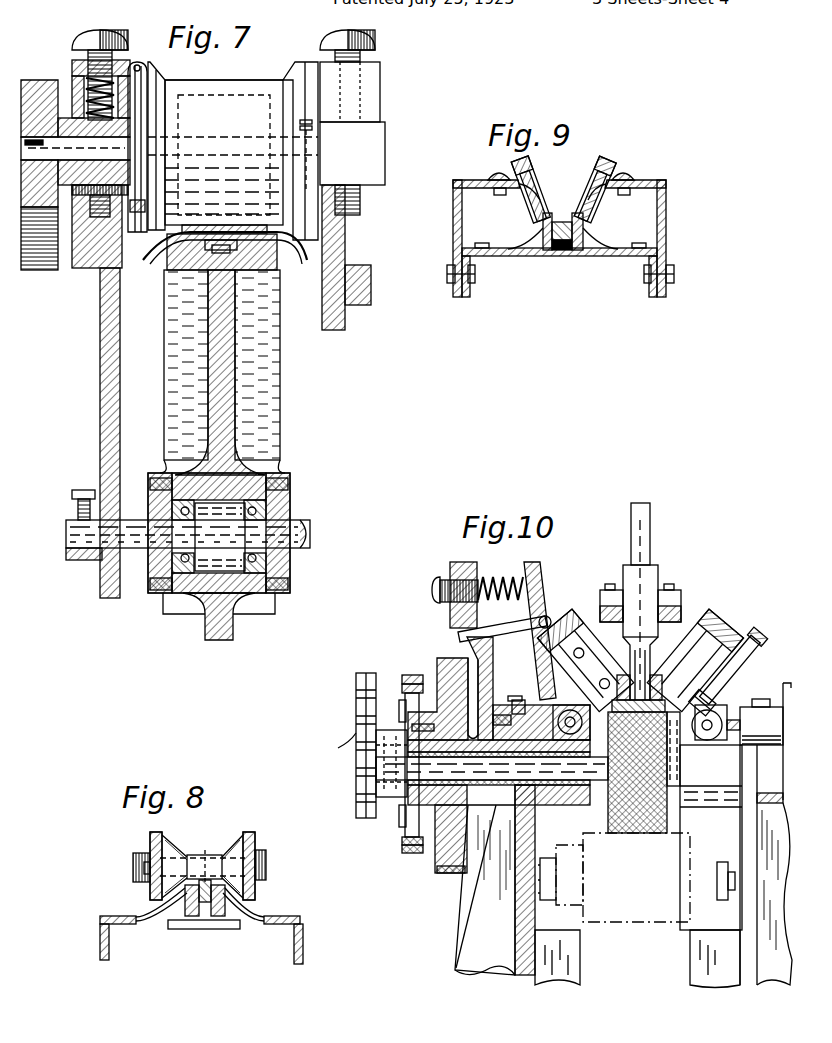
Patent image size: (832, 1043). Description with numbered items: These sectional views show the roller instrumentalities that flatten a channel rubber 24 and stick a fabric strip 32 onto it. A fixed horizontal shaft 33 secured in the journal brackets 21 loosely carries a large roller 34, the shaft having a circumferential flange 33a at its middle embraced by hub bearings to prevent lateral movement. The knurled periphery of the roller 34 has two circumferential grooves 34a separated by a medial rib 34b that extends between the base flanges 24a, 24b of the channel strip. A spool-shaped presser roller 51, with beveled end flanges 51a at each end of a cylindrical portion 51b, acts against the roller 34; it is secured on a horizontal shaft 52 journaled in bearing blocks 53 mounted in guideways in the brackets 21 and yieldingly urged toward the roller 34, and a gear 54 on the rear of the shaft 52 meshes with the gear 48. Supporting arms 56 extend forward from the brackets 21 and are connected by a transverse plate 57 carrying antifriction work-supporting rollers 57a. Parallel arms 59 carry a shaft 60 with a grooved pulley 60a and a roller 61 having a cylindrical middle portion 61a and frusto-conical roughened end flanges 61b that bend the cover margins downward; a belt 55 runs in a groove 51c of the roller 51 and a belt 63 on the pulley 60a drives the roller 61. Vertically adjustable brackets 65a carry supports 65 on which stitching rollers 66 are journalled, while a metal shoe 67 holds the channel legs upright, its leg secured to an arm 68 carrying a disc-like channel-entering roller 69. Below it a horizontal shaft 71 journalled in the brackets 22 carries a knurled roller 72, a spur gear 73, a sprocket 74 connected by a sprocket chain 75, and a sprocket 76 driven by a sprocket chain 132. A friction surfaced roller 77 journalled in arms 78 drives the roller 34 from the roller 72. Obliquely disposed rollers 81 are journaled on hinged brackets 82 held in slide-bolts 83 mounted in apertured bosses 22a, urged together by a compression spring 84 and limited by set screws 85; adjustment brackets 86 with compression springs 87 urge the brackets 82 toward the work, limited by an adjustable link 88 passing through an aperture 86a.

In FIG. 7, the journal brackets 21 is at (100, 322).
In FIG. 10, the journal brackets 22 is at (515, 925).
In FIG. 10, the apertured bosses 22a is at (496, 705).
In FIG. 7, the channel rubber 24 is at (225, 232).
In FIG. 9, the channel rubber 24 is at (575, 256).
In FIG. 8, the channel rubber 24 is at (220, 910).
In FIG. 10, the base flange 24a is at (627, 703).
In FIG. 10, the base flange 24b is at (674, 703).
In FIG. 7, the fabric strip 32 is at (290, 250).
In FIG. 9, the fabric strip 32 is at (595, 240).
In FIG. 8, the fabric strip 32 is at (255, 908).
In FIG. 7, the horizontal shaft 33 is at (303, 532).
In FIG. 7, the circumferential flange 33a is at (225, 545).
In FIG. 7, the large roller 34 is at (220, 352).
In FIG. 7, the circumferential grooves 34a is at (175, 255).
In FIG. 7, the medial rib 34b is at (235, 252).
In FIG. 7, the gear 48 is at (45, 262).
In FIG. 7, the presser roller 51 is at (233, 152).
In FIG. 7, the beveled end flanges 51a is at (152, 60).
In FIG. 7, the cylindrical portion 51b is at (250, 86).
In FIG. 7, the groove 51c is at (100, 250).
In FIG. 7, the horizontal shaft 52 is at (390, 155).
In FIG. 7, the bearing blocks 53 is at (82, 98).
In FIG. 7, the gear 54 is at (35, 82).
In FIG. 7, the belt 55 is at (138, 62).
In FIG. 9, the supporting arms 56 is at (468, 297).
In FIG. 8, the supporting arms 56 is at (102, 948).
In FIG. 9, the transverse plate 57 is at (505, 258).
In FIG. 8, the transverse plate 57 is at (140, 915).
In FIG. 8, the work-supporting rollers 57a is at (204, 930).
In FIG. 8, the parallel arms 59 is at (150, 840).
In FIG. 8, the shaft 60 is at (268, 863).
In FIG. 8, the grooved pulley 60a is at (135, 862).
In FIG. 8, the roller 61 is at (202, 858).
In FIG. 8, the cylindrical middle portion 61a is at (203, 853).
In FIG. 8, the frusto-conical end flanges 61b is at (170, 845).
In FIG. 8, the belt 63 is at (142, 878).
In FIG. 9, the supports 65 is at (498, 178).
In FIG. 9, the vertically adjustable brackets 65a is at (456, 232).
In FIG. 9, the stitching rollers 66 is at (525, 178).
In FIG. 9, the metal shoe 67 is at (560, 221).
In FIG. 8, the metal shoe 67 is at (200, 912).
In FIG. 10, the arm 68 is at (600, 590).
In FIG. 10, the channel-entering roller 69 is at (650, 530).
In FIG. 10, the horizontal shaft 71 is at (565, 790).
In FIG. 10, the knurled roller 72 is at (670, 822).
In FIG. 10, the spur gear 73 is at (450, 873).
In FIG. 10, the sprocket 74 is at (412, 853).
In FIG. 10, the sprocket chain 75 is at (403, 840).
In FIG. 10, the sprocket 76 is at (378, 735).
In FIG. 10, the friction surfaced roller 77 is at (622, 922).
In FIG. 10, the arms 78 is at (545, 900).
In FIG. 10, the obliquely disposed rollers 81 is at (565, 632).
In FIG. 10, the brackets 82 is at (530, 565).
In FIG. 10, the slide-bolts 83 is at (555, 708).
In FIG. 10, the compression spring 84 is at (496, 712).
In FIG. 10, the set screws 85 is at (517, 696).
In FIG. 10, the adjustment brackets 86 is at (462, 562).
In FIG. 10, the aperture 86a is at (462, 645).
In FIG. 10, the compression springs 87 is at (500, 578).
In FIG. 10, the adjustable link 88 is at (505, 628).
In FIG. 10, the sprocket chain 132 is at (378, 745).